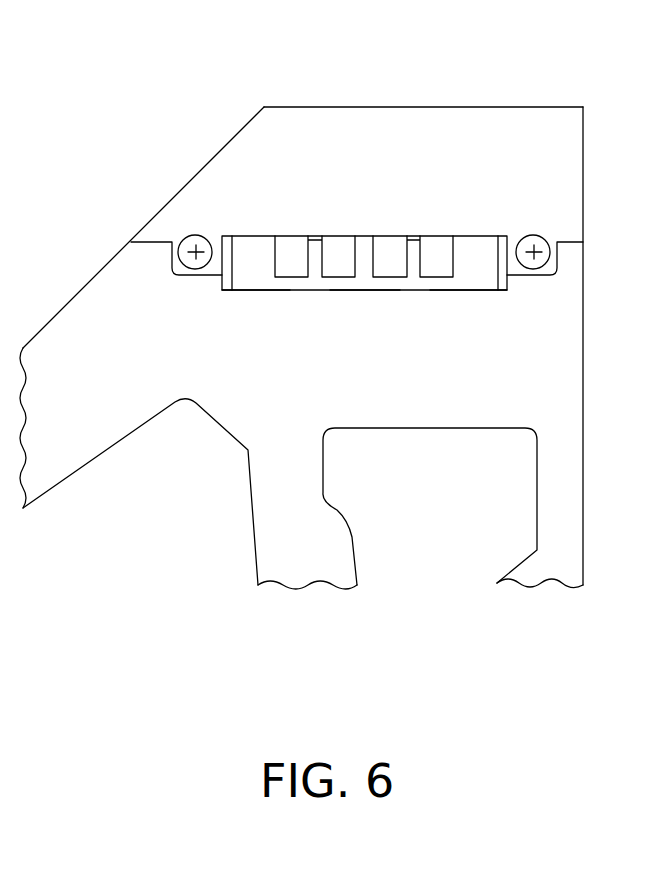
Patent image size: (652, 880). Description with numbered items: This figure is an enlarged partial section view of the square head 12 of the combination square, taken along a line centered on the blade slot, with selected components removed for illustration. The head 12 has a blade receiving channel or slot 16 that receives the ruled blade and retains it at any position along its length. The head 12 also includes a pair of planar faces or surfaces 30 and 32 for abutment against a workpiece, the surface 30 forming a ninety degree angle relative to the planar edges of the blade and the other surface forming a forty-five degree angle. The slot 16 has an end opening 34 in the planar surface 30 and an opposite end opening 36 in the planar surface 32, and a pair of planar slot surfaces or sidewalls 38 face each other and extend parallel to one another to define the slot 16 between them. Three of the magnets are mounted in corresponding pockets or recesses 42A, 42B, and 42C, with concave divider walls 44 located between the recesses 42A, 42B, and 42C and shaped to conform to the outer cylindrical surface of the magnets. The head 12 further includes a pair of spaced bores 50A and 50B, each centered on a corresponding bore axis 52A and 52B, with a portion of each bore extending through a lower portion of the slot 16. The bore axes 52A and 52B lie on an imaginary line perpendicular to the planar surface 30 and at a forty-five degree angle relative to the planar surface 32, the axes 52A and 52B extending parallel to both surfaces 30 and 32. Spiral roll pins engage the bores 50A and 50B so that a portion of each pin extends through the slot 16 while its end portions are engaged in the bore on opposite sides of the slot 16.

The square head 12 is at (330, 262).
The blade receiving channel or slot 16 is at (323, 315).
The planar face or surface 30 is at (583, 358).
The planar face or surface 32 is at (60, 307).
The end opening 34 is at (583, 163).
The end opening 36 is at (183, 187).
The planar slot surfaces or sidewalls 38 is at (275, 130).
The pocket or recess 42A is at (253, 292).
The pocket or recess 42B is at (363, 292).
The pocket or recess 42C is at (465, 292).
The concave divider walls 44 is at (288, 255).
The bore 50A is at (188, 237).
The bore 50B is at (541, 237).
The bore axis 52A is at (180, 262).
The bore axis 52B is at (538, 264).